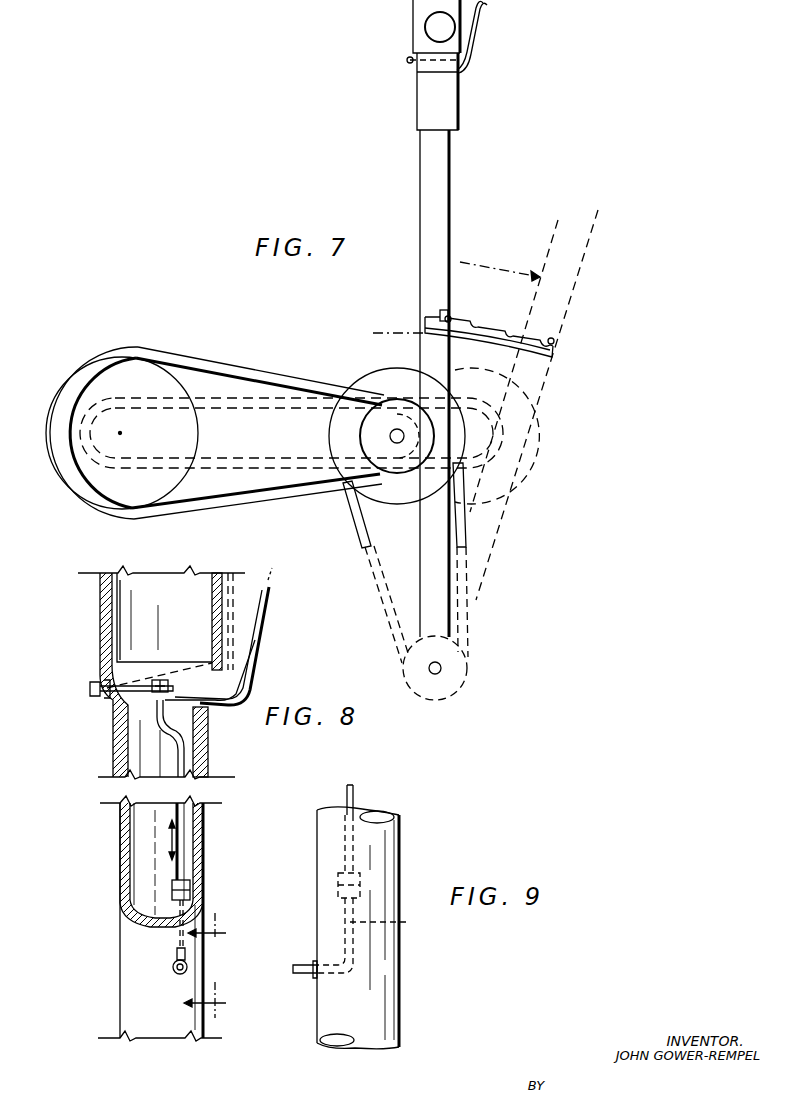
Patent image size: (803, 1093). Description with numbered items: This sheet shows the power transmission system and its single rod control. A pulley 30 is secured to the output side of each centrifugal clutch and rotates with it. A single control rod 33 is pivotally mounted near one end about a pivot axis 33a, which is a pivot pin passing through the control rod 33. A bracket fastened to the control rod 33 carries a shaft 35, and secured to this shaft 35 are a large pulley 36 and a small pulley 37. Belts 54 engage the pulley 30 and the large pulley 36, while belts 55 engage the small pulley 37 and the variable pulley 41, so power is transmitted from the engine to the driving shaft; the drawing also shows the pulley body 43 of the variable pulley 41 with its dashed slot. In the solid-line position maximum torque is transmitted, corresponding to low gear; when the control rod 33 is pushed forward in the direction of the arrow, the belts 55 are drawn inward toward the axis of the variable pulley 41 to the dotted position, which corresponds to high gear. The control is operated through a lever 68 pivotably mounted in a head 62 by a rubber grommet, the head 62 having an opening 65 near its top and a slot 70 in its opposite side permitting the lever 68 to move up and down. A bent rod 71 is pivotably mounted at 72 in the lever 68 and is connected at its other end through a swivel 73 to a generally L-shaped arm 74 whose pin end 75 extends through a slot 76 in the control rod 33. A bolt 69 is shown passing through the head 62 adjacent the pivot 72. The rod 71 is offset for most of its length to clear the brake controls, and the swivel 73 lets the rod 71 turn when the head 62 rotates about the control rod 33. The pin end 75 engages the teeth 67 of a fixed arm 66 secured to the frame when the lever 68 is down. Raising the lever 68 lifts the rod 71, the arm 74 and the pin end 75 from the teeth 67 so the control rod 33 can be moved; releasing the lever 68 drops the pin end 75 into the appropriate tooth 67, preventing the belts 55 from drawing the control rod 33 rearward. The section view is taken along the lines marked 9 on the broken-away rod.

In FIG. 7, the pulley 30 is at (452, 660).
In FIG. 7, the control rod 33 is at (432, 170).
In FIG. 8, the control rod 33 is at (205, 831).
In FIG. 9, the control rod 33 is at (388, 840).
In FIG. 7, the pivot axis 33a is at (445, 672).
In FIG. 7, the shaft 35 is at (397, 428).
In FIG. 7, the large pulley 36 is at (380, 382).
In FIG. 7, the small pulley 37 is at (373, 420).
In FIG. 7, the variable pulley 41 is at (150, 350).
In FIG. 7, the drive pulley 43 is at (100, 375).
In FIG. 7, the belt 54 is at (356, 525).
In FIG. 7, the belt 55 is at (237, 375).
In FIG. 7, the head 62 is at (446, 90).
In FIG. 8, the head 62 is at (115, 755).
In FIG. 7, the opening 65 is at (432, 25).
In FIG. 7, the arm 66 is at (497, 331).
In FIG. 7, the teeth 67 is at (481, 325).
In FIG. 7, the lever 68 is at (479, 22).
In FIG. 8, the lever 68 is at (258, 630).
In FIG. 8, the bolt 69 is at (100, 694).
In FIG. 8, the slot 70 is at (215, 686).
In FIG. 8, the bent rod 71 is at (185, 757).
In FIG. 9, the bent rod 71 is at (355, 793).
In FIG. 8, the pivot 72 is at (160, 680).
In FIG. 8, the swivel 73 is at (180, 885).
In FIG. 9, the swivel 73 is at (360, 880).
In FIG. 8, the L-shaped arm 74 is at (180, 910).
In FIG. 9, the L-shaped arm 74 is at (391, 922).
In FIG. 7, the pin end 75 is at (451, 318).
In FIG. 8, the pin end 75 is at (187, 964).
In FIG. 9, the pin end 75 is at (307, 963).
In FIG. 7, the slot 76 is at (440, 312).
In FIG. 8, the slot 76 is at (176, 955).
In FIG. 8, the section line 9- 9 is at (205, 966).